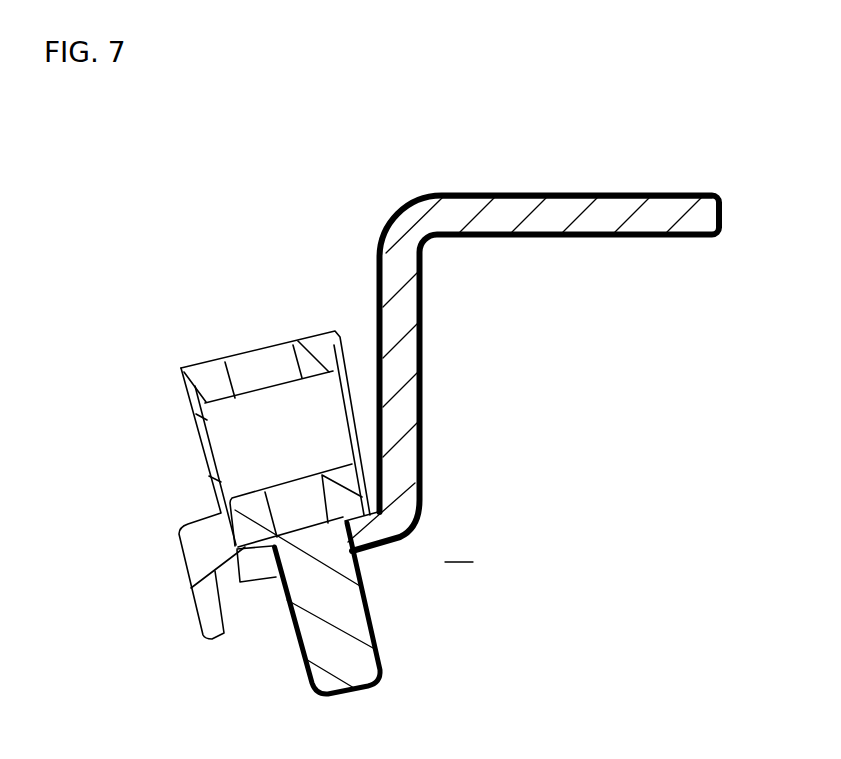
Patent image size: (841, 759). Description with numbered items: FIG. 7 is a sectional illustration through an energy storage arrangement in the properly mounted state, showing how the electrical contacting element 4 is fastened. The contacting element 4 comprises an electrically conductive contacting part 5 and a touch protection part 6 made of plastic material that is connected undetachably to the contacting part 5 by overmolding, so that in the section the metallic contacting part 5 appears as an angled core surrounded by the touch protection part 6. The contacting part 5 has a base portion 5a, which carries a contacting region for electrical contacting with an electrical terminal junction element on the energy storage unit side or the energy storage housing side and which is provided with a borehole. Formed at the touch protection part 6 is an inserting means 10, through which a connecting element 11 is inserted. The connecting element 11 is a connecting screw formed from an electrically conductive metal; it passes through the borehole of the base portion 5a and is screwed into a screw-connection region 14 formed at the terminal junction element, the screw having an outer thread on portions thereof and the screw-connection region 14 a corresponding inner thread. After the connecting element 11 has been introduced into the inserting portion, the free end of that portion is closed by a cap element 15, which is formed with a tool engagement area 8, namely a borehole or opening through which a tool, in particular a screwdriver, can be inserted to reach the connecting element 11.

The contacting element 4 is at (385, 193).
The contacting part 5 is at (564, 210).
The touch protection part 6 is at (493, 195).
The tool engagement area 8 is at (258, 347).
The inserting means 10 is at (198, 450).
The connecting element 11 is at (337, 602).
The screw-connection region 14 is at (461, 546).
The cap element 15 is at (308, 350).
The base portion 5a is at (260, 565).